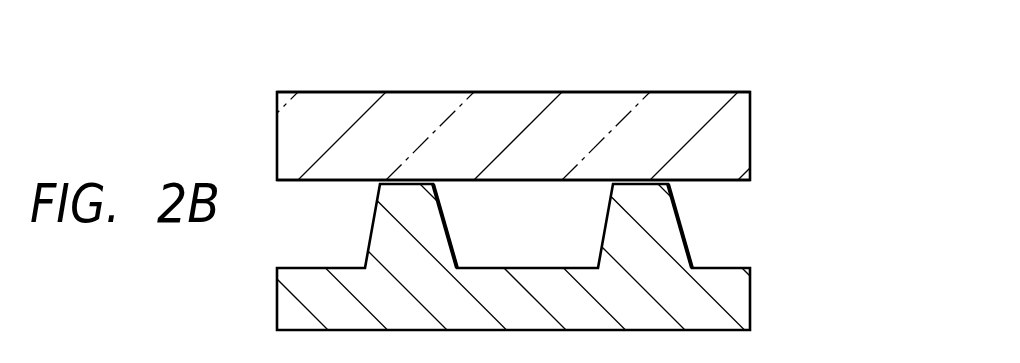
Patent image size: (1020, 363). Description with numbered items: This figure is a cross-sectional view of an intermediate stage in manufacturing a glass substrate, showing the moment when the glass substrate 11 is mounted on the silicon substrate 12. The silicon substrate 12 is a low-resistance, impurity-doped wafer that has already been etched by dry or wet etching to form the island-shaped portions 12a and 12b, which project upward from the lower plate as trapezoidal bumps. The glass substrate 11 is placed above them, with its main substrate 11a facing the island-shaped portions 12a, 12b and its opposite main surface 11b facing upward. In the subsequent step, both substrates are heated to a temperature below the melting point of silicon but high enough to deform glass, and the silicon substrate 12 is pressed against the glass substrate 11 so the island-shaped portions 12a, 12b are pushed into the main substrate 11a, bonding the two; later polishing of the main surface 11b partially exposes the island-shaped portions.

The glass substrate 11 is at (725, 130).
The main substrate 11a is at (725, 181).
The main surface 11b is at (505, 91).
The silicon substrate 12 is at (735, 303).
The island-shaped portion 12a is at (430, 235).
The island-shaped portion 12b is at (668, 230).